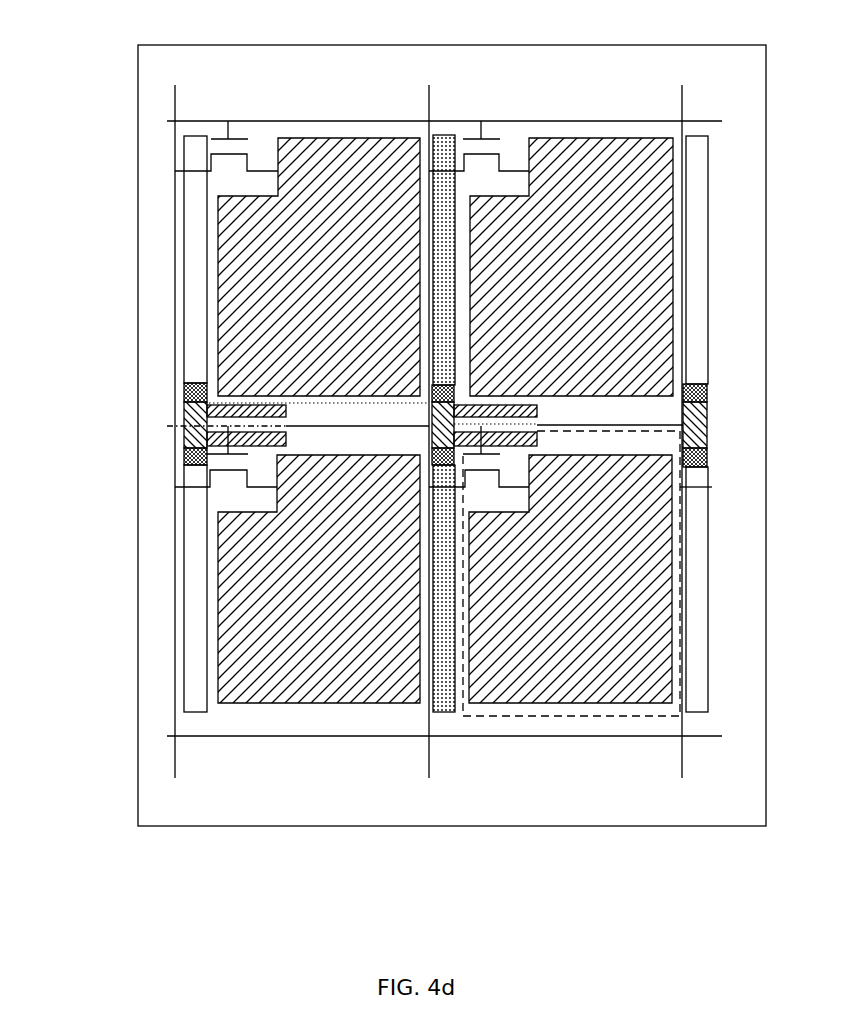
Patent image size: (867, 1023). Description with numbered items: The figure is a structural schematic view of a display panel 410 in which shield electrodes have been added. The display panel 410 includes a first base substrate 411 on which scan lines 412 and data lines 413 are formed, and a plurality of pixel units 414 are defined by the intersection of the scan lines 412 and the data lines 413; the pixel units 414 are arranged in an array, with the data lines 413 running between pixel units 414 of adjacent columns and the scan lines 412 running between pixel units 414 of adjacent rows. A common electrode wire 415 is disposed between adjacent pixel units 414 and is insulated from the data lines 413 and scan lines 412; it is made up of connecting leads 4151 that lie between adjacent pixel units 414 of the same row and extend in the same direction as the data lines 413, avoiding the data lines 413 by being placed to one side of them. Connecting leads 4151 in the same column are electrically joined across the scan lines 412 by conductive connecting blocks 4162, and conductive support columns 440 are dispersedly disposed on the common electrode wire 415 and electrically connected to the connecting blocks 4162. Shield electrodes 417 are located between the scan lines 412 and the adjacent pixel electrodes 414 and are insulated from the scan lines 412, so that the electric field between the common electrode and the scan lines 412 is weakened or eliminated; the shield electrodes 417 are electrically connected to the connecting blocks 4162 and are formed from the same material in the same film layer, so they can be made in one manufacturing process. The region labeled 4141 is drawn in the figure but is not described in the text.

The display panel 410 is at (622, 876).
The first base substrate 411 is at (247, 793).
The scan lines 412 is at (284, 737).
The data lines 413 is at (429, 763).
The pixel units 414 is at (530, 716).
The pixel electrode portion 4141 is at (592, 703).
The common electrode wire 415 is at (114, 424).
The connecting leads 4151 is at (184, 312).
The shield electrodes 417 is at (535, 404).
The conductive support columns 440 is at (707, 394).
The connecting blocks 4162 is at (707, 430).